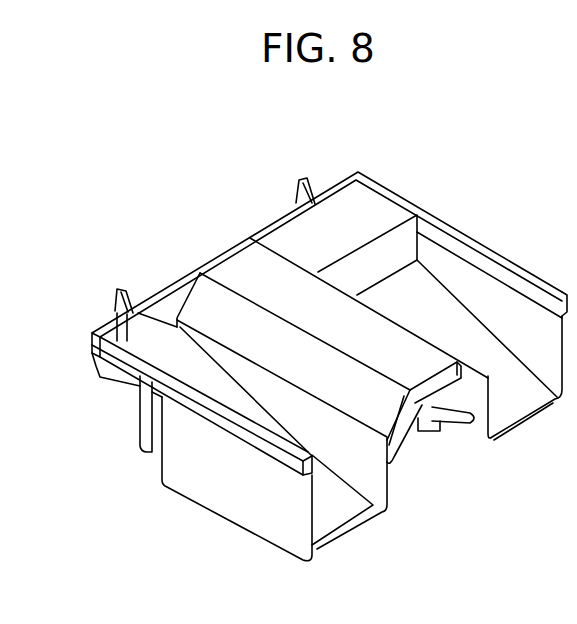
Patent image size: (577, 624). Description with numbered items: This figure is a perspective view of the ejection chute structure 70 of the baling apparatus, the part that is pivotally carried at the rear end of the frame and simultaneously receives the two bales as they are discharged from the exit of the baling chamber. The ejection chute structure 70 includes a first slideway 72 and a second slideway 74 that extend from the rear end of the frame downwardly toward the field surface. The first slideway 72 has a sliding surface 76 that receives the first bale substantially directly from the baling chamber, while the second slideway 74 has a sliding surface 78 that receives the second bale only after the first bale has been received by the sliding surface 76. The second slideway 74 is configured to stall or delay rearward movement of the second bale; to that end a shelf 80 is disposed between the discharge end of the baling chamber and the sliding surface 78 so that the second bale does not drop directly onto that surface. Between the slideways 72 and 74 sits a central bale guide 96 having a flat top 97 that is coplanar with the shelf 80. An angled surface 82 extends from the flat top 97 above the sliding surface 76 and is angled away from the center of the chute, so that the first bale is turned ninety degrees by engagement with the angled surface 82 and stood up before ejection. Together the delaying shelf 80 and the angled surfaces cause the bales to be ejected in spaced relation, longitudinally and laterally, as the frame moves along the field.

The ejection chute structure 70 is at (253, 202).
The first slideway 72 is at (170, 338).
The second slideway 74 is at (413, 275).
The sliding surface 76 is at (322, 510).
The sliding surface 78 is at (500, 405).
The shelf 80 is at (327, 236).
The angled surface 82 is at (348, 401).
The central bale guide 96 is at (233, 266).
The flat top 97 is at (389, 364).